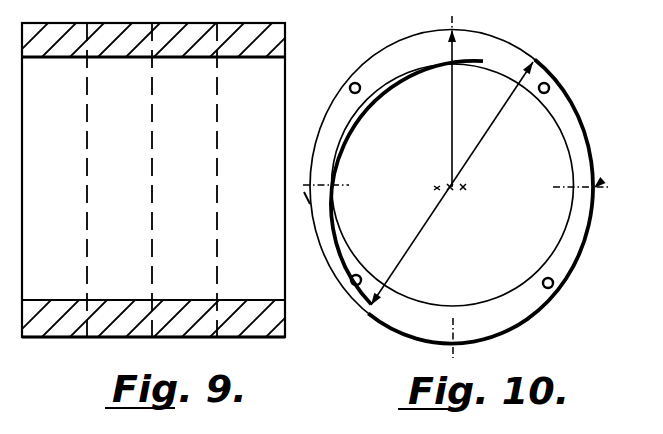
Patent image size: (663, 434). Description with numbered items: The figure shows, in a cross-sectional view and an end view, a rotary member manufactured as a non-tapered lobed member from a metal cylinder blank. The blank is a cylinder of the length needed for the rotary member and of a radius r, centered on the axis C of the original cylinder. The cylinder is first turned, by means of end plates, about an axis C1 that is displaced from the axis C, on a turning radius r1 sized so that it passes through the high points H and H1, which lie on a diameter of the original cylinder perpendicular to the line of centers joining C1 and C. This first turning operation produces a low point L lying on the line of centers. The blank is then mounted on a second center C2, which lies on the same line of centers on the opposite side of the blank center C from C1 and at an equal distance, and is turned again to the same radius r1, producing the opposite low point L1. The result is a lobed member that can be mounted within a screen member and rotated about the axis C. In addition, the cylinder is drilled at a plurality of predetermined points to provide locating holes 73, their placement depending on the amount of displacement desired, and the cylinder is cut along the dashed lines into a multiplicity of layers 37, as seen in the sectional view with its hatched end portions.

In FIG. 9, the layers 37 is at (77, 338).
In FIG. 10, the locating holes 73 is at (576, 281).
In FIG. 10, the radius r is at (452, 116).
In FIG. 10, the turning radius r1 is at (452, 183).
In FIG. 10, the axis of the original cylinder C is at (456, 198).
In FIG. 10, the first turning axis C1 is at (436, 189).
In FIG. 10, the second turning center C2 is at (463, 186).
In FIG. 10, the high point H is at (455, 28).
In FIG. 10, the high point H1 is at (455, 345).
In FIG. 10, the low point L is at (596, 186).
In FIG. 10, the low point L1 is at (307, 198).